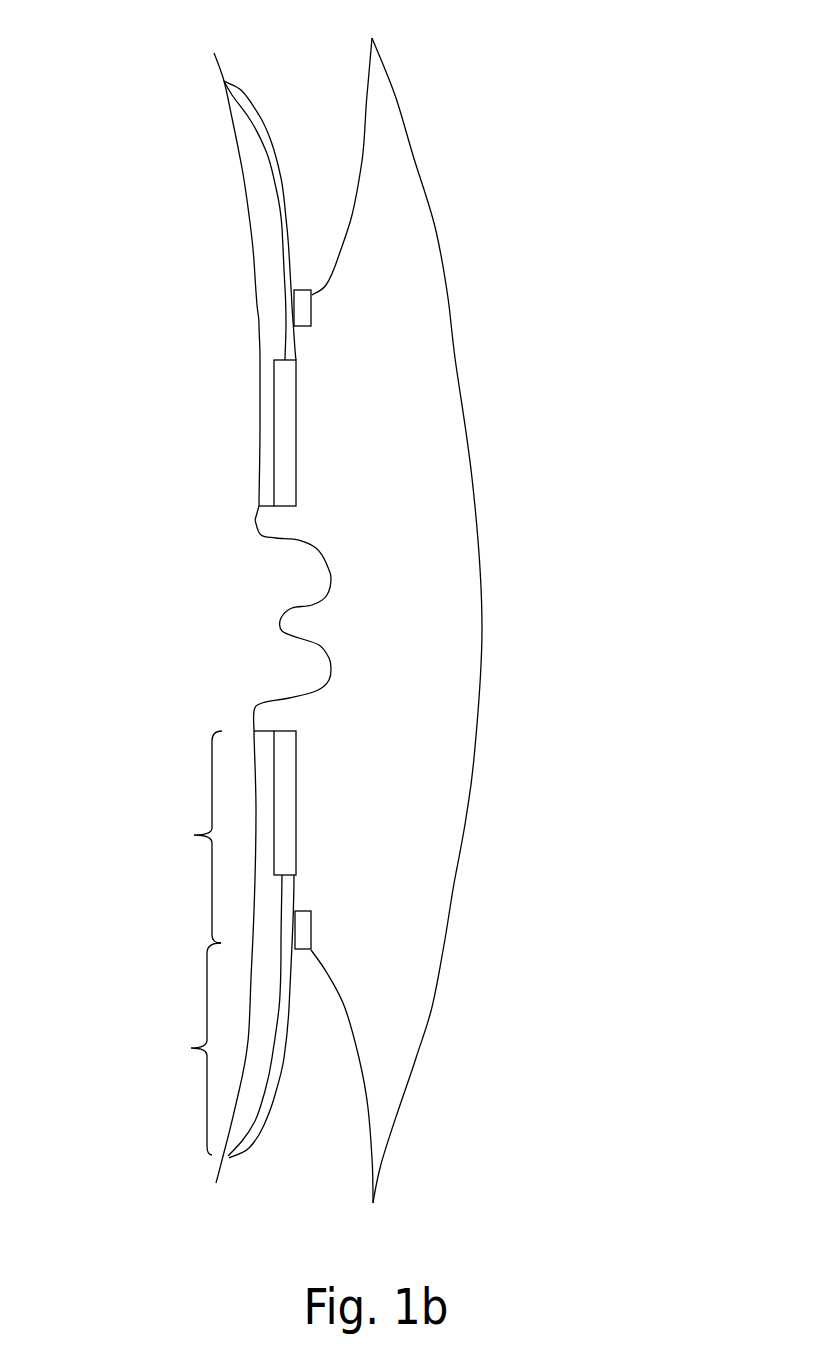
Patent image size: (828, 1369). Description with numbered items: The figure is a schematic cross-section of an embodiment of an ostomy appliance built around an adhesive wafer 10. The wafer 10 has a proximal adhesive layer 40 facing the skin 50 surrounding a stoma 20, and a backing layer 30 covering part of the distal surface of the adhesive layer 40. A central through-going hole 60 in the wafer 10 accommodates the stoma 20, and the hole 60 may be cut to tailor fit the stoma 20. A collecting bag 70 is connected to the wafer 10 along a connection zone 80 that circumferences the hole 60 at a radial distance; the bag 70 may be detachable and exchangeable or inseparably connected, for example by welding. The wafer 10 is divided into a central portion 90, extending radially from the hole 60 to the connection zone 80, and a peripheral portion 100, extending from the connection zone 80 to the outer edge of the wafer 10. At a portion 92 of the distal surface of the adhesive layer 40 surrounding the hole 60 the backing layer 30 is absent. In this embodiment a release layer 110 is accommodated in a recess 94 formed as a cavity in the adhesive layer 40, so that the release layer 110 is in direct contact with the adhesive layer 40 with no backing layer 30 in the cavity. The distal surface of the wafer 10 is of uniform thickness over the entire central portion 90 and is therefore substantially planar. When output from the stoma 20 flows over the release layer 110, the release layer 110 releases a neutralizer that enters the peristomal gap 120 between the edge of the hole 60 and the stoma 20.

The adhesive wafer 10 is at (272, 103).
The stoma 20 is at (332, 575).
The backing layer 30 is at (273, 1090).
The adhesive layer 40 is at (253, 1095).
The skin 50 is at (258, 374).
The through-going hole 60 is at (315, 523).
The collecting bag 70 is at (435, 1013).
The connection zone 80 is at (313, 310).
The central portion 90 is at (189, 837).
The portion of the distal surface of the adhesive layer 92 is at (273, 768).
The recess 94 is at (292, 870).
The peripheral portion 100 is at (198, 957).
The release layer 110 is at (288, 432).
The peristomal gap 120 is at (282, 722).